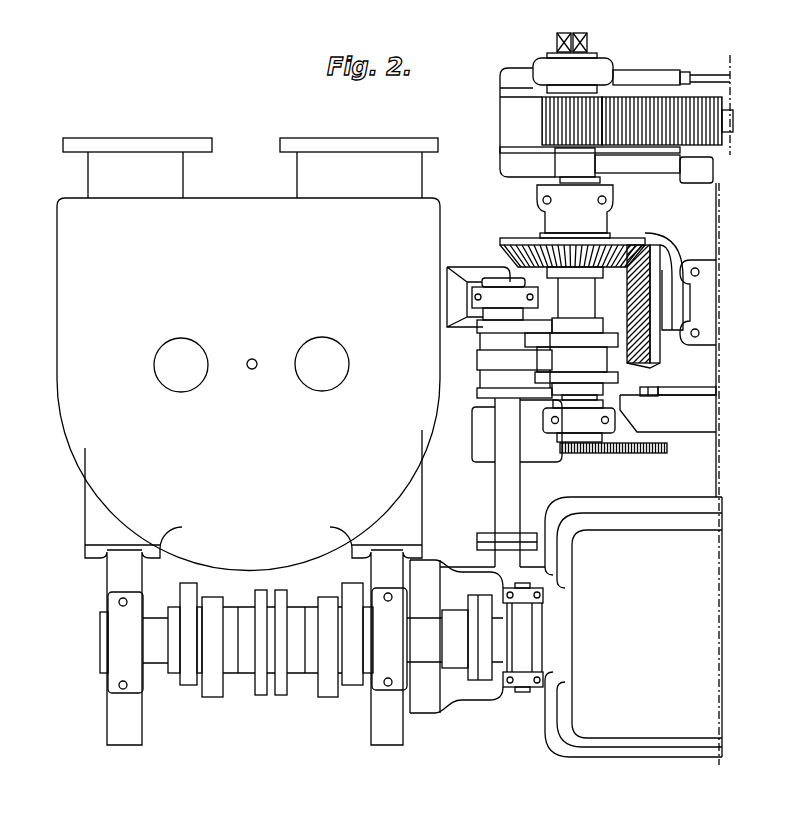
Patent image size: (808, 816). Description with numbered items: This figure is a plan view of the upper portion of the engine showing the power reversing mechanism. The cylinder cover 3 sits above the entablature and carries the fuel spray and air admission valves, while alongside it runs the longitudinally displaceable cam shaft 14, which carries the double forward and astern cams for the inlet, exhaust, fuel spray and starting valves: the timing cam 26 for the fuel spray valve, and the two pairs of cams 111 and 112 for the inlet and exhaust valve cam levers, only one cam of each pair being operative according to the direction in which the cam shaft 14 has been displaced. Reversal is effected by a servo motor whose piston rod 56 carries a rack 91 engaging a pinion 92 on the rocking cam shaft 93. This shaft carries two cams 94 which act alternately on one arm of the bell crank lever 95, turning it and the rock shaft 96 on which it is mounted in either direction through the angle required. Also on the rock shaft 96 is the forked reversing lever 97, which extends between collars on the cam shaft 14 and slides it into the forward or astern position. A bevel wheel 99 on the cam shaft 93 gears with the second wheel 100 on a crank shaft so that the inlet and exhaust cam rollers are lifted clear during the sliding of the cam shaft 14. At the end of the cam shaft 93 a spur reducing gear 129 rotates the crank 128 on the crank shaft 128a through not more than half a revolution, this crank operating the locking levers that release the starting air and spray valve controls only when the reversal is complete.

The cylinder cover 3 is at (248, 354).
The cam shaft 14 is at (155, 635).
The timing cam 26 is at (278, 592).
The piston rod 56 is at (727, 120).
The rack 91 is at (645, 110).
The pinion 92 is at (577, 115).
The cam shaft 93 is at (578, 290).
The cams 94 is at (587, 338).
The bell crank lever 95 is at (508, 380).
The rock shaft 96 is at (503, 490).
The reversing lever 97 is at (525, 678).
The bevel wheel 99 is at (613, 260).
The second wheel 100 is at (647, 277).
The cams 111 is at (213, 675).
The cams 112 is at (353, 668).
The crank 128 is at (648, 388).
The crank shaft 128a is at (640, 430).
The spur reducing gear 129 is at (597, 452).